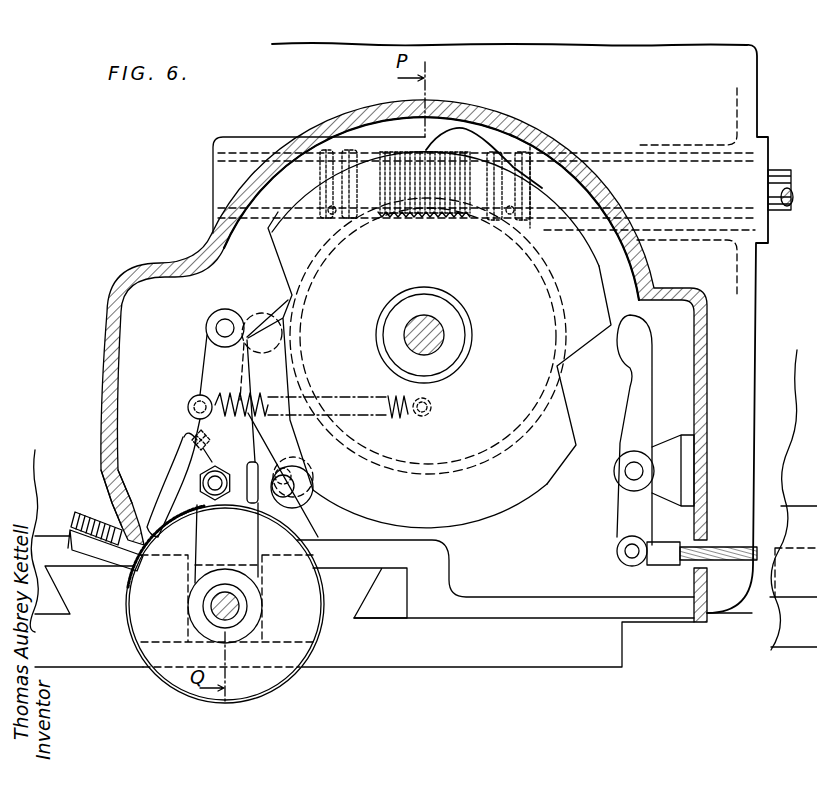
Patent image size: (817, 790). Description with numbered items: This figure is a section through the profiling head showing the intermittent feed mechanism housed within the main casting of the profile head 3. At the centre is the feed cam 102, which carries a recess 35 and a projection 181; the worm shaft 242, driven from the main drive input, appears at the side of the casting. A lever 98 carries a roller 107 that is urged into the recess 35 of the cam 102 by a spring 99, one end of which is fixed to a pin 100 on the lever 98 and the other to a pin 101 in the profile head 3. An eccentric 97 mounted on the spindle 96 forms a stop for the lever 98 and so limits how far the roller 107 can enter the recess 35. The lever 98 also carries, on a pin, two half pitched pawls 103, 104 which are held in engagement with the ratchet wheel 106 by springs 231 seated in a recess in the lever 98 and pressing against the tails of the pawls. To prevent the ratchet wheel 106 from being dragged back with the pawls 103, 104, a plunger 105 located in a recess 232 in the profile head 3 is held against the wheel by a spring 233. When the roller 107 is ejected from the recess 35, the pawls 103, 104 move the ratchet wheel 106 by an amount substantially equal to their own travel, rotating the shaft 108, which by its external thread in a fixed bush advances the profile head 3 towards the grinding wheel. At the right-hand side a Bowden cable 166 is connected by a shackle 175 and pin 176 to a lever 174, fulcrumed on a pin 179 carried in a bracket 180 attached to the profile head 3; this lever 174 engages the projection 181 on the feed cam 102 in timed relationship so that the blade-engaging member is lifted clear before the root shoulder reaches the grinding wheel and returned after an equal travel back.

The profile head 3 is at (110, 372).
The recess 35 is at (281, 264).
The spindle 96 is at (262, 508).
The eccentric 97 is at (295, 488).
The lever 98 is at (221, 358).
The spring 99 is at (345, 396).
The pin 100 is at (192, 398).
The pin 101 is at (432, 413).
The feed cam 102 is at (508, 487).
The half pitched pawl 103 is at (153, 507).
The half pitched pawl 104 is at (184, 500).
The plunger 105 is at (192, 450).
The ratchet wheel 106 is at (167, 653).
The roller 107 is at (212, 324).
The shaft 108 is at (235, 612).
The Bowden cable 166 is at (720, 590).
The lever 174 is at (645, 396).
The shackle 175 is at (660, 556).
The pin 176 is at (617, 551).
The pin 179 is at (628, 473).
The bracket 180 is at (675, 440).
The projection 181 is at (480, 140).
The spring 231 is at (194, 433).
The recess 232 is at (110, 492).
The spring 233 is at (100, 517).
The worm shaft 242 is at (443, 216).